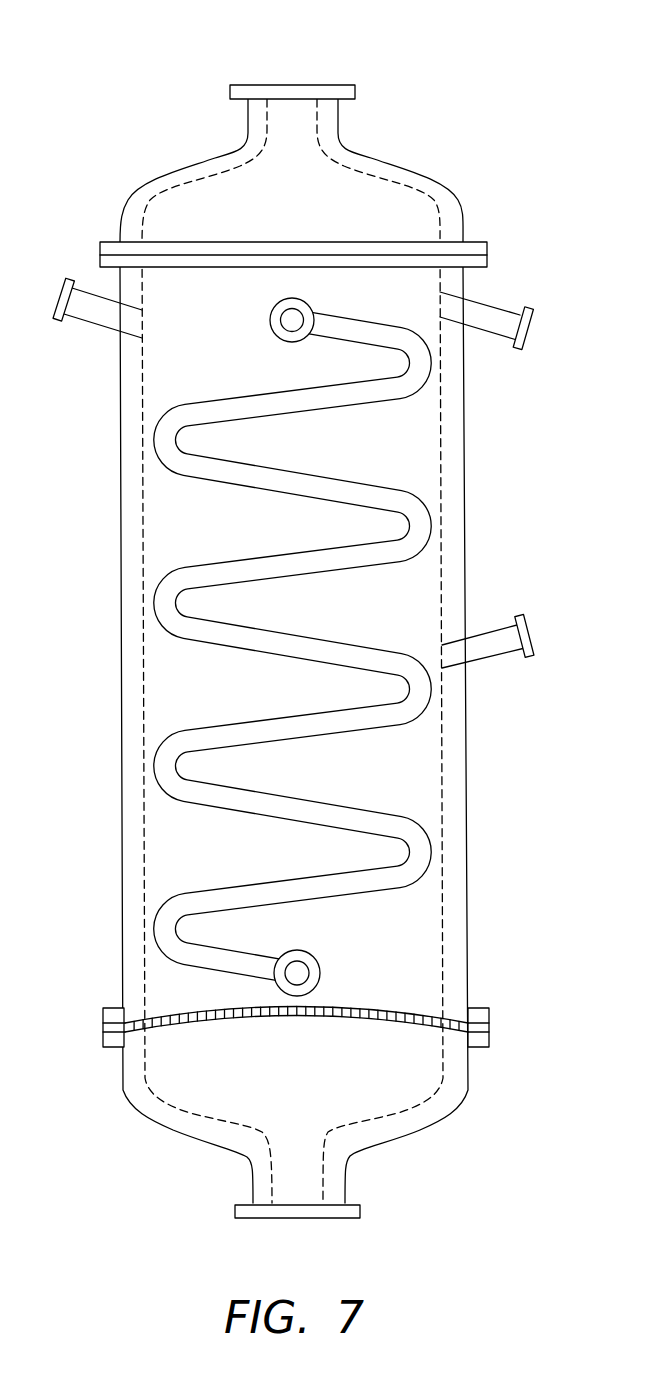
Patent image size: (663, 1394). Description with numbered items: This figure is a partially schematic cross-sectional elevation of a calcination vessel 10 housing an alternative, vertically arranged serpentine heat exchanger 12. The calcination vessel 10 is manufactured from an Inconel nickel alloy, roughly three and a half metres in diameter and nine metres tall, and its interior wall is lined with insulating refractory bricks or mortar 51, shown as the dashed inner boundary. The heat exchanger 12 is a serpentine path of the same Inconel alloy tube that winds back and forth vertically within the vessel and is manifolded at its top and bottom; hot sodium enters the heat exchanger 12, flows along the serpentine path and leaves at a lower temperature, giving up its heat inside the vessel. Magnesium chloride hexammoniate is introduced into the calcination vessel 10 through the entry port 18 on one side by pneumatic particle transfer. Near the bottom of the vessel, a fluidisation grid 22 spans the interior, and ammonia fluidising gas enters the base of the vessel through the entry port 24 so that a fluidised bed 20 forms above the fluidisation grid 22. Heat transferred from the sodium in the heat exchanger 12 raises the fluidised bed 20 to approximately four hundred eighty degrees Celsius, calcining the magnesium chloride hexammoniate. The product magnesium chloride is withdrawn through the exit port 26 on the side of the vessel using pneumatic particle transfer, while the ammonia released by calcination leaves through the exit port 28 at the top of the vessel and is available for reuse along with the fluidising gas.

The calcination vessel 10 is at (287, 651).
The heat exchanger 12 is at (346, 647).
The entry port 18 is at (107, 325).
The fluidised bed 20 is at (397, 793).
The fluidisation grid 22 is at (310, 1020).
The entry port 24 is at (310, 1220).
The exit port 26 is at (475, 302).
The exit port 28 is at (296, 83).
The insulating refractory bricks or mortar 51 is at (453, 815).